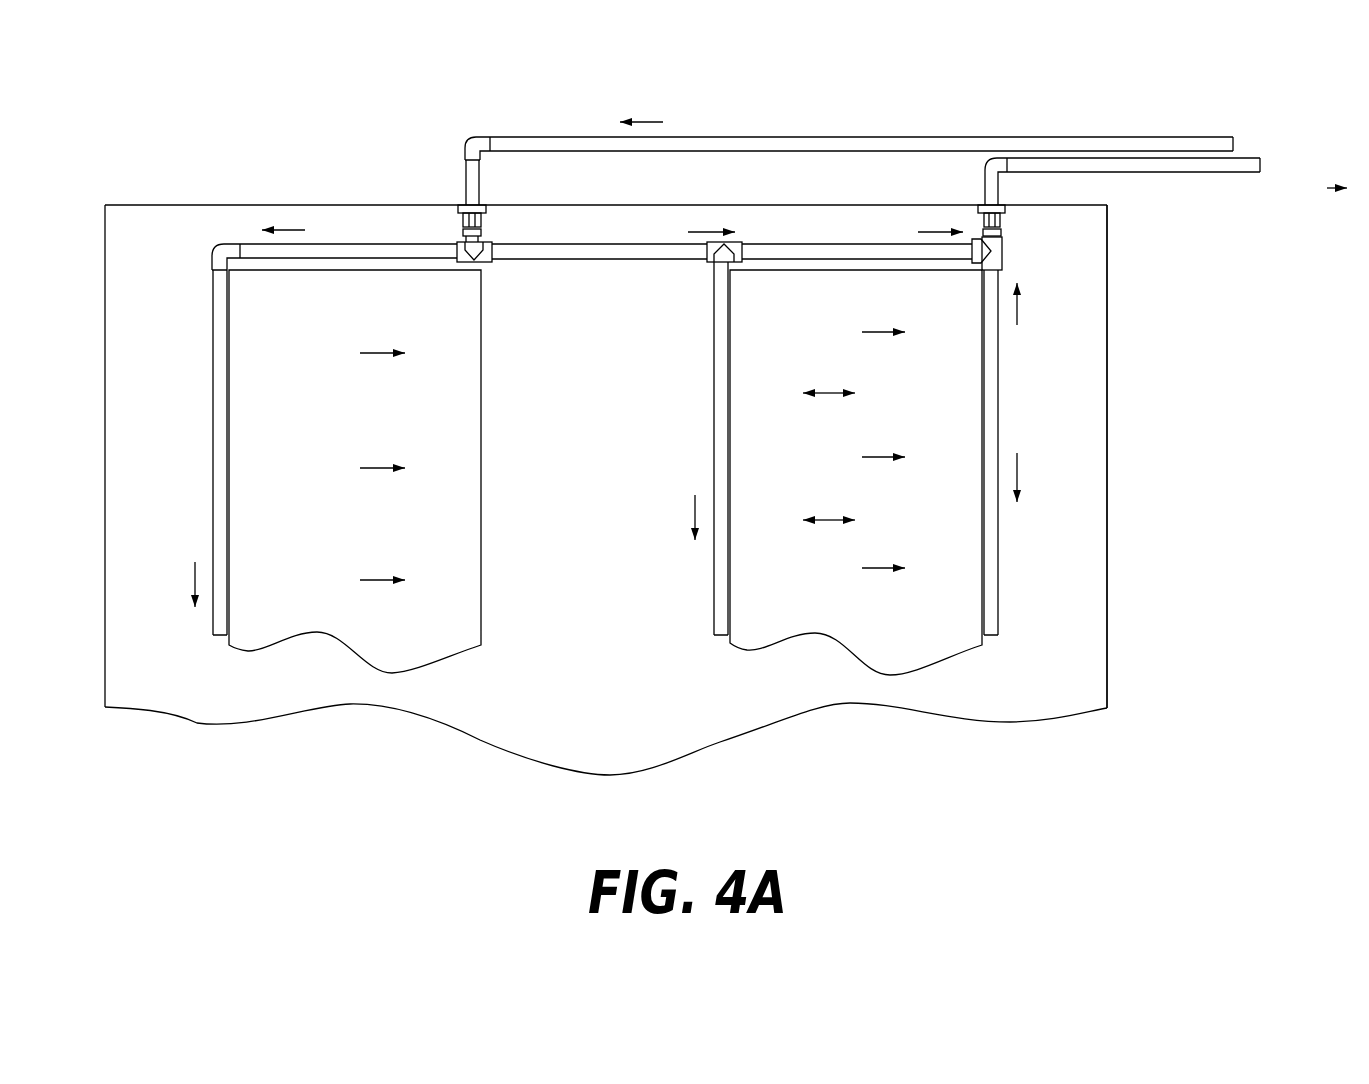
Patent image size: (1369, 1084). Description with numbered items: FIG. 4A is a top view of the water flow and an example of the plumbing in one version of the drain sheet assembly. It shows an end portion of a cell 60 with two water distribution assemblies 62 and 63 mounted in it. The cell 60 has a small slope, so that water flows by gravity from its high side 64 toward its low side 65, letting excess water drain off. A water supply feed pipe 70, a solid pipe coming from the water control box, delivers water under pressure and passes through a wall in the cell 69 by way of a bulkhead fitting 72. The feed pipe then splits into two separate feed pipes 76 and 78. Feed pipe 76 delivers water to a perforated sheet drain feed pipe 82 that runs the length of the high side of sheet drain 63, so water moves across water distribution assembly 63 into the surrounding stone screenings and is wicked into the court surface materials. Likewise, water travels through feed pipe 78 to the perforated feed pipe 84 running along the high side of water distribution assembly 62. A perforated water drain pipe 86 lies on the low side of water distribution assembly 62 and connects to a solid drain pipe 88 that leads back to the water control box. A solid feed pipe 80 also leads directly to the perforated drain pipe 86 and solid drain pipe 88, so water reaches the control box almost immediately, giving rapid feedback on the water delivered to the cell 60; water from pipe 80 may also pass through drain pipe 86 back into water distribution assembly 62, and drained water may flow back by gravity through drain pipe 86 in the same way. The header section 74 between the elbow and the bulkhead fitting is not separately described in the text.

The cell 60 is at (1110, 345).
The water distribution assembly 62 is at (927, 597).
The water distribution assembly 63 is at (418, 555).
The high side 64 is at (105, 433).
The low side 65 is at (1107, 388).
The wall in the cell 69 is at (518, 205).
The water supply feed pipe 70 is at (928, 145).
The bulkhead fitting 72 is at (462, 203).
The header pipe section 74 is at (383, 203).
The feed pipe 76 is at (262, 247).
The feed pipe 78 is at (542, 250).
The solid feed pipe 80 is at (852, 262).
The perforated sheet drain feed pipe 82 is at (225, 438).
The perforated feed pipe 84 is at (725, 398).
The perforated water drain pipe 86 is at (991, 462).
The solid drain pipe 88 is at (1167, 165).